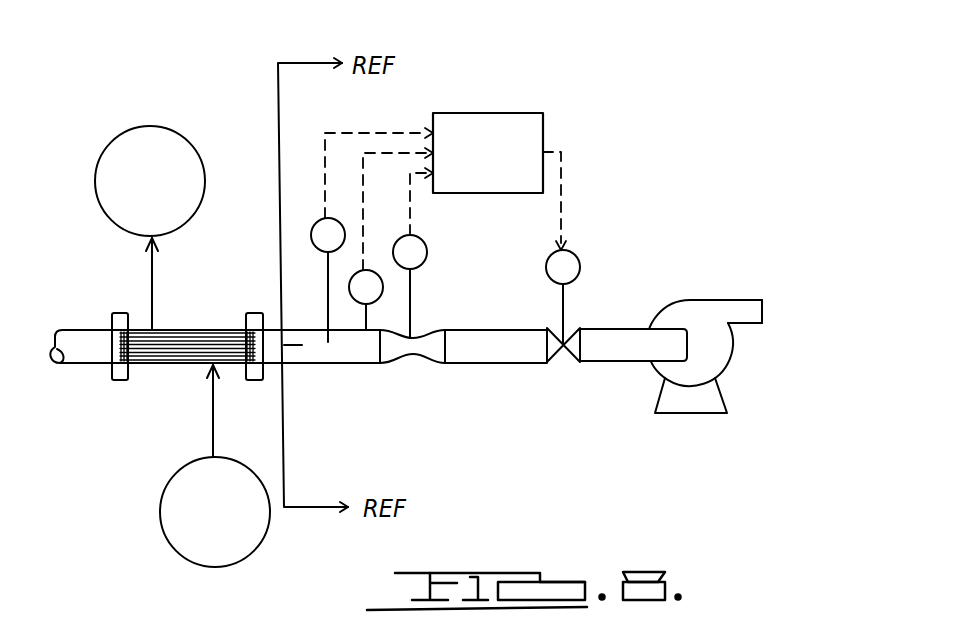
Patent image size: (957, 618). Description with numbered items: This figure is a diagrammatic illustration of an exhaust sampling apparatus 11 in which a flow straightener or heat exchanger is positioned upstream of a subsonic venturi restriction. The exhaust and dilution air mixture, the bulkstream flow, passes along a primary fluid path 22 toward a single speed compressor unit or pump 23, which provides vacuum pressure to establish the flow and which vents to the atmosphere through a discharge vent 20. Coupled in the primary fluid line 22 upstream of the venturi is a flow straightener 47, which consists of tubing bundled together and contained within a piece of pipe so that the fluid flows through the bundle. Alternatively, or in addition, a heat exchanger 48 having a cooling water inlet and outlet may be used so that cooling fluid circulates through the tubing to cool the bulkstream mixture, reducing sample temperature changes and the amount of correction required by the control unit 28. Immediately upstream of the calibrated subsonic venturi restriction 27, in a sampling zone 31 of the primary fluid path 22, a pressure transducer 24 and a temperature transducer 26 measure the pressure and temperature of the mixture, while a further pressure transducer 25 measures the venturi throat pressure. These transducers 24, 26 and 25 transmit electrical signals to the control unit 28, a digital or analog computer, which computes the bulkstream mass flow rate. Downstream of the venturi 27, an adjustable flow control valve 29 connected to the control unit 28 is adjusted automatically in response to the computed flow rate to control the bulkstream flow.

The apparatus 11 is at (704, 142).
The discharge vent 20 is at (763, 304).
The primary fluid path 22 is at (297, 328).
The pump 23 is at (712, 407).
The pressure transducer 24 is at (375, 290).
The pressure transducer 25 is at (416, 250).
The temperature transducer 26 is at (311, 232).
The subsonic venturi restriction 27 is at (410, 360).
The control unit 28 is at (535, 127).
The flow control valve 29 is at (563, 364).
The sampling zone 31 is at (353, 365).
The flow straightener 47 is at (147, 368).
The heat exchanger 48 is at (97, 163).